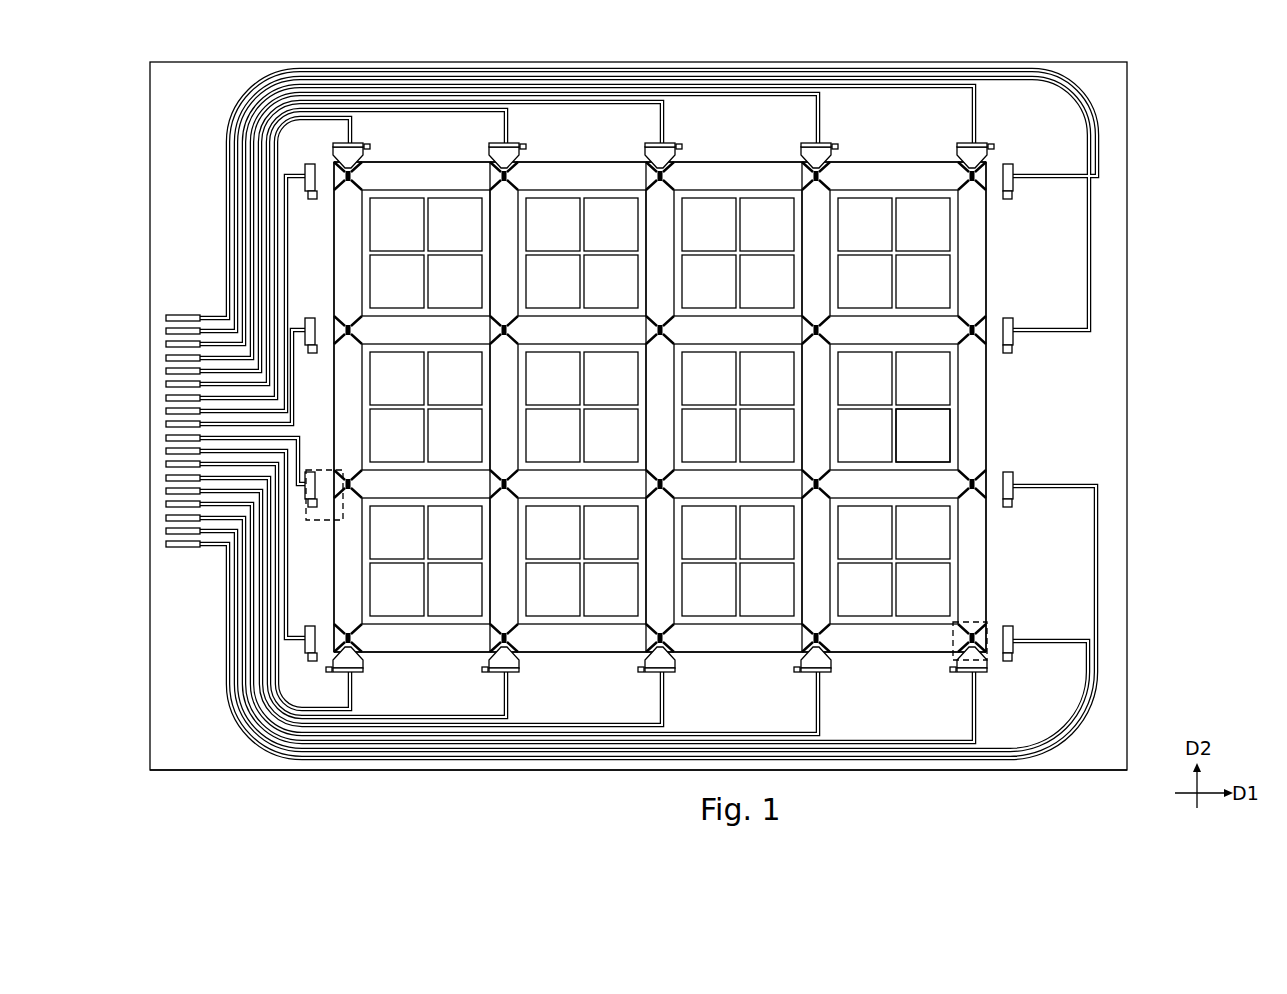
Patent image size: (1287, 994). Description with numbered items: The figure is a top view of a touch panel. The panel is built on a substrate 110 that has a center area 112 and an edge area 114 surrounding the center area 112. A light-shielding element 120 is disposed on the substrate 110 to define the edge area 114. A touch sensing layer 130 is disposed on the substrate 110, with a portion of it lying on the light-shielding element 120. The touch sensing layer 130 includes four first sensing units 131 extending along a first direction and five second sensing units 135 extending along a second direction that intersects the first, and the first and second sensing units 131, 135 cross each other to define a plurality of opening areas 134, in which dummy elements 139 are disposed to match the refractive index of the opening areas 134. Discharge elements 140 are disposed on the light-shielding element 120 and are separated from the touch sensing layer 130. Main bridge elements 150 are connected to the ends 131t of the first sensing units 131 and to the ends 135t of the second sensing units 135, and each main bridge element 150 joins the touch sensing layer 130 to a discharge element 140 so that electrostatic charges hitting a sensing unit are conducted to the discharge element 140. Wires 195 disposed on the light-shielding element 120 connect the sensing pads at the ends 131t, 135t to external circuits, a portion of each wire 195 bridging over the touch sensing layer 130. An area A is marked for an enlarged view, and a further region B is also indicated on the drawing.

The substrate 110 is at (638, 496).
The center area 112 is at (893, 630).
The edge area 114 is at (862, 778).
The light-shielding element 120 is at (544, 707).
The touch sensing layer 130 is at (786, 420).
The first sensing unit 131 is at (1000, 330).
The end of first sensing unit 131t is at (1020, 186).
The opening area 134 is at (960, 404).
The second sensing unit 135 is at (975, 270).
The end of second sensing unit 135t is at (988, 138).
The dummy element 139 is at (938, 436).
The discharge element 140 is at (985, 668).
The main bridge element 150 is at (1008, 661).
The wire 195 is at (1098, 518).
The area A is at (320, 522).
The region B is at (1000, 636).